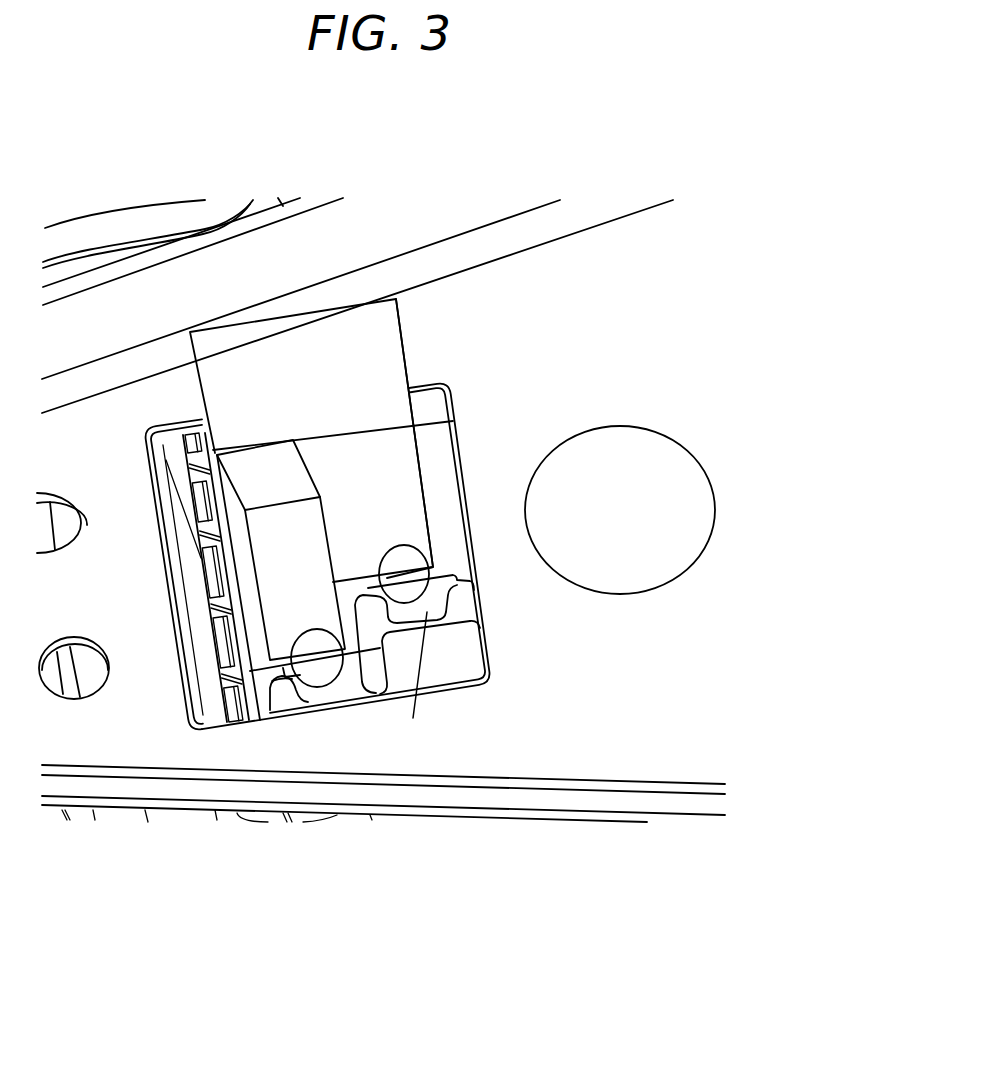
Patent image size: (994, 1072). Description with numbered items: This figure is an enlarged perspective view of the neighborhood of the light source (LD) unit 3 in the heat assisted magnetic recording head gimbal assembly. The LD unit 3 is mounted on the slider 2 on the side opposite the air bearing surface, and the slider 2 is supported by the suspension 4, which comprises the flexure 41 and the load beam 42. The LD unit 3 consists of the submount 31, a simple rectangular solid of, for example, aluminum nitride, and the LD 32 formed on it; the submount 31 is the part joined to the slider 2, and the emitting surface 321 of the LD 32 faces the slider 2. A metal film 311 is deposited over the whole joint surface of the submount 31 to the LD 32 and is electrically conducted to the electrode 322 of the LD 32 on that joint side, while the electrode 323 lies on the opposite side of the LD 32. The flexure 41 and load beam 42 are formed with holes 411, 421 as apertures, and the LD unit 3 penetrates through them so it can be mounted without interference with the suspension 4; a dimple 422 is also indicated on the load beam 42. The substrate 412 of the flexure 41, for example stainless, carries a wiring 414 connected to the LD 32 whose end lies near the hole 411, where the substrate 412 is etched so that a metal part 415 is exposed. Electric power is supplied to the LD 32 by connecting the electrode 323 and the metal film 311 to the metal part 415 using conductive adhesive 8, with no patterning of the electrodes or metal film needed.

The slider 2 is at (453, 523).
The light source (LD) unit 3 is at (331, 128).
The submount 31 is at (297, 363).
The metal film on the surface of submount 311 is at (408, 515).
The LD (laser diode) 32 is at (263, 475).
The emitting surface of LD 321 is at (258, 653).
The electrode of LD 322 is at (226, 447).
The electrode of LD 323 is at (282, 585).
The suspension 4 is at (613, 932).
The flexure 41 is at (294, 535).
The hole formed to flexure 411 is at (148, 440).
The substrate of flexure 412 is at (447, 675).
The wiring for connecting to LD 414 is at (297, 698).
The metal part of flexure wiring 415 is at (352, 682).
The hole formed to load beam 421 is at (280, 717).
The load beam 42 is at (606, 708).
The dimple 422 is at (627, 490).
The conductive adhesive 8 is at (317, 655).